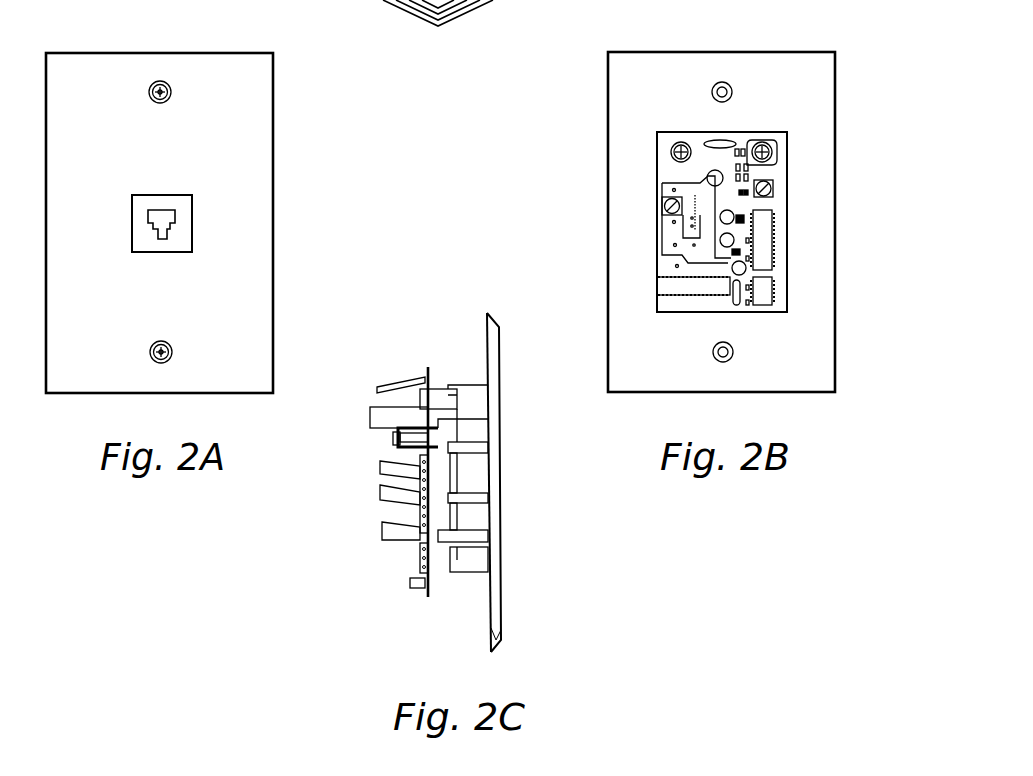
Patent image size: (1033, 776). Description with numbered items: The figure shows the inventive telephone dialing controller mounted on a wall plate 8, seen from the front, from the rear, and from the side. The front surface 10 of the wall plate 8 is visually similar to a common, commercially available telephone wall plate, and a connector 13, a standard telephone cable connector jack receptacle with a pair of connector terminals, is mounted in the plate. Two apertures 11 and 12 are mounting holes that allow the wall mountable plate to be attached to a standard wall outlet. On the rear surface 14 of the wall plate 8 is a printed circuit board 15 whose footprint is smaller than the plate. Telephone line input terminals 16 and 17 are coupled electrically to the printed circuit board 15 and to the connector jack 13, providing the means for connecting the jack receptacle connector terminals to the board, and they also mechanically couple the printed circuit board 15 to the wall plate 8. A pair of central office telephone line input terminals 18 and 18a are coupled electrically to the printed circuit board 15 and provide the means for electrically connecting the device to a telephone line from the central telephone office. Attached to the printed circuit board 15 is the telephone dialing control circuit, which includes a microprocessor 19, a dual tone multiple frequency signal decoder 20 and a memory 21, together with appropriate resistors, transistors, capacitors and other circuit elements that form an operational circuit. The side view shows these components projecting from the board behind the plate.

In FIG. 2A, the wall plate 8 is at (211, 223).
In FIG. 2C, the wall plate 8 is at (470, 492).
In FIG. 2A, the front surface 10 is at (250, 338).
In FIG. 2C, the front surface 10 is at (502, 558).
In FIG. 2B, the aperture 11 is at (727, 84).
In FIG. 2B, the aperture 12 is at (731, 357).
In FIG. 2A, the connector 13 is at (180, 229).
In FIG. 2B, the rear surface 14 is at (755, 214).
In FIG. 2C, the rear surface 14 is at (488, 608).
In FIG. 2B, the printed circuit board 15 is at (749, 227).
In FIG. 2C, the printed circuit board 15 is at (428, 595).
In FIG. 2B, the telephone line input terminal 16 is at (678, 145).
In FIG. 2B, the telephone line input terminal 17 is at (764, 145).
In FIG. 2B, the central office telephone line input terminal 18 is at (662, 202).
In FIG. 2B, the central office telephone line input terminal 18a is at (772, 190).
In FIG. 2B, the microprocessor 19 is at (677, 287).
In FIG. 2B, the dual tone multiple frequency (DTMF) signal decoder 20 is at (767, 237).
In FIG. 2B, the memory 21 is at (762, 297).